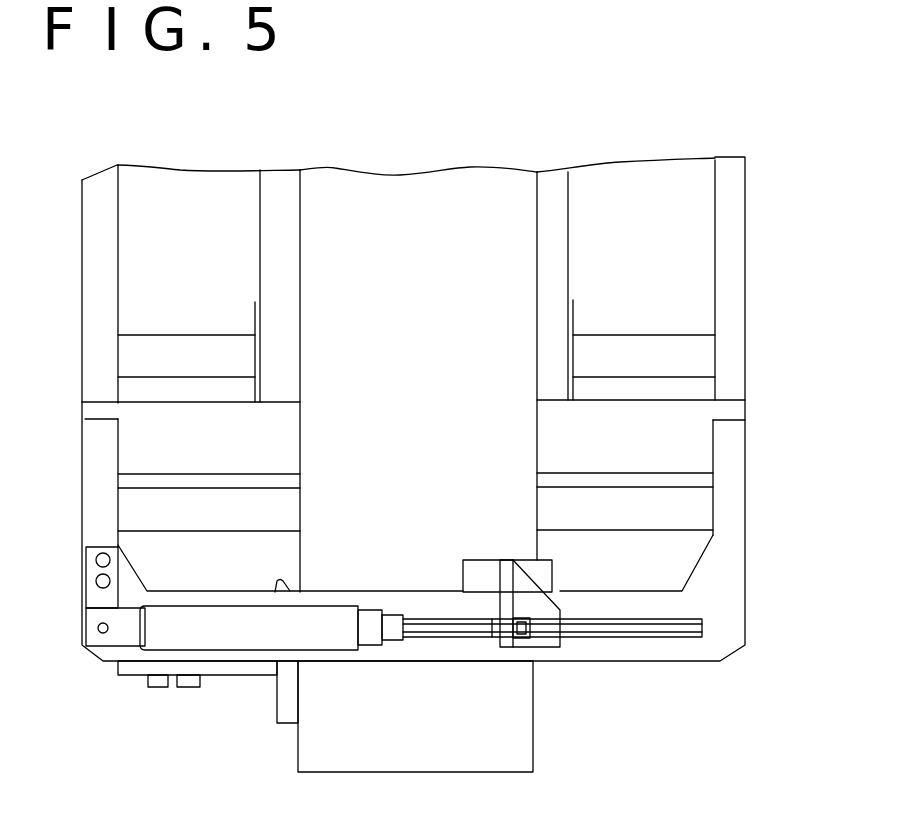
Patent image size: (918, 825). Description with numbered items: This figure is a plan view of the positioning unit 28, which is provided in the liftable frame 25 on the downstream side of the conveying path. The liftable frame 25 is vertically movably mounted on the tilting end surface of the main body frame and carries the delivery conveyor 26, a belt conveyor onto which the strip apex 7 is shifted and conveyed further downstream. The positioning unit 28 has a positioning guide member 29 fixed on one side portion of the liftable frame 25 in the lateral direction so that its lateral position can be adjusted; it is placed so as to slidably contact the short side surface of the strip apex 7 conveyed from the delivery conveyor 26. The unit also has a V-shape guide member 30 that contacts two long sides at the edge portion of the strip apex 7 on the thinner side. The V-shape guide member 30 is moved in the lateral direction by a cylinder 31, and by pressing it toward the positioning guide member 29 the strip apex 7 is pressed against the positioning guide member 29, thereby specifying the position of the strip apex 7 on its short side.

The strip apex 7 is at (517, 438).
The liftable frame 25 is at (735, 270).
The delivery conveyor 26 is at (556, 266).
The positioning unit 28 is at (245, 688).
The positioning guide member 29 is at (286, 699).
The V-shape guide member 30 is at (545, 637).
The cylinder 31 is at (153, 641).